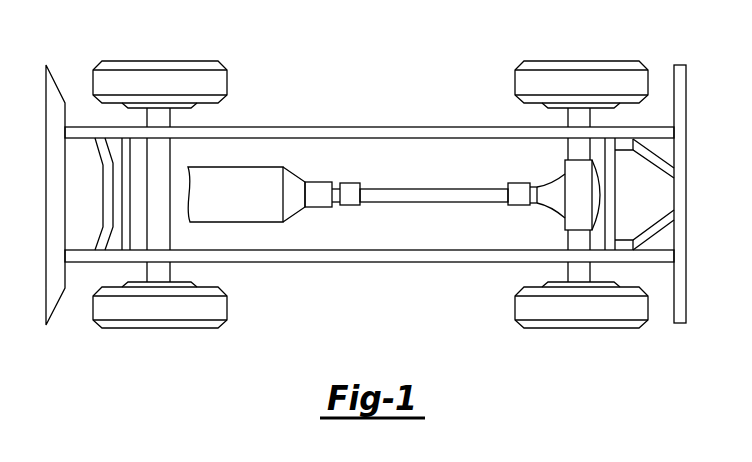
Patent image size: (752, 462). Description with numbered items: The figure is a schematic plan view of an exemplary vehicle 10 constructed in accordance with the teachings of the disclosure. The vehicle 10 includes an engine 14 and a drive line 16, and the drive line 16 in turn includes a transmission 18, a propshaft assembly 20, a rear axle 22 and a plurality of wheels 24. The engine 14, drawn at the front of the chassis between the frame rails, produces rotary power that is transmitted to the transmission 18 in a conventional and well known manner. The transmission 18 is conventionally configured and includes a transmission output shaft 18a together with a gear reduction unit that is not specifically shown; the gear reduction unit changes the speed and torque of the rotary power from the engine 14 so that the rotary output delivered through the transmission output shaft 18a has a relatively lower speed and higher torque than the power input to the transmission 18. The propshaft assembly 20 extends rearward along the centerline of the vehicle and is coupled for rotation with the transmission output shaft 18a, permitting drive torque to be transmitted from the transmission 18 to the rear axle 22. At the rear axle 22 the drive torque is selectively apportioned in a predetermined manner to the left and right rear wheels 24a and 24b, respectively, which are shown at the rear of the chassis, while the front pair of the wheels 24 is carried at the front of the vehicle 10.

The vehicle 10 is at (326, 68).
The engine 14 is at (258, 212).
The drive line 16 is at (327, 229).
The transmission 18 is at (298, 182).
The transmission output shaft 18a is at (340, 183).
The propshaft assembly 20 is at (458, 179).
The rear axle 22 is at (550, 221).
The wheels 24 is at (134, 341).
The left rear wheel 24a is at (525, 303).
The right rear wheel 24b is at (582, 72).